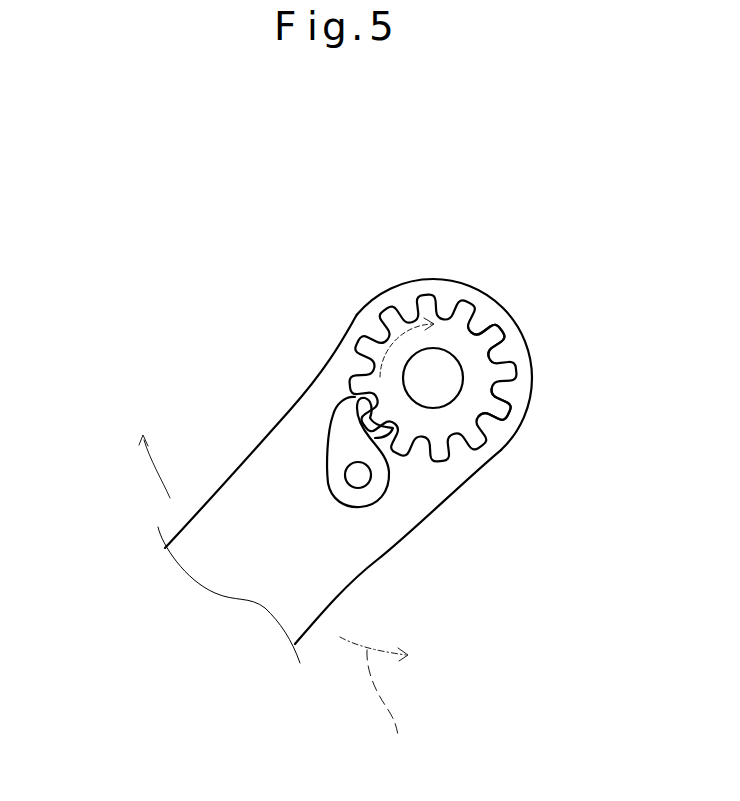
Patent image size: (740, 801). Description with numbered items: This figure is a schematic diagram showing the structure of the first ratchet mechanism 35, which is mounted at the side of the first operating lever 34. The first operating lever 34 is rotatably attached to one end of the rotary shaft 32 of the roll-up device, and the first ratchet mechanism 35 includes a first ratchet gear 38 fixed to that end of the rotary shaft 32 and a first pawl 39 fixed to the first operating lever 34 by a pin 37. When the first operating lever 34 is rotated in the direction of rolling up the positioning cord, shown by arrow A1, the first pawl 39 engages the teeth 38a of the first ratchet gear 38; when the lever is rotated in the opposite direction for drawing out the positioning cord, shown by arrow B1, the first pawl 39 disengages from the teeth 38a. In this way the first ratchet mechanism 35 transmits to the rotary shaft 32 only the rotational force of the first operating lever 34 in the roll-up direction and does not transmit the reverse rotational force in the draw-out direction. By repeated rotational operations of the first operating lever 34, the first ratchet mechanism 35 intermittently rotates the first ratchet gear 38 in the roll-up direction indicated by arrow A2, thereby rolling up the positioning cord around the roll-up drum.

The rotary shaft 32 is at (446, 376).
The first operating lever 34 is at (320, 582).
The first ratchet mechanism 35 is at (404, 298).
The pin 37 is at (362, 475).
The first ratchet gear 38 is at (467, 423).
The teeth 38a is at (500, 330).
The first pawl 39 is at (333, 448).
The direction of arrow A1 is at (150, 463).
The direction of arrow A2 is at (392, 310).
The direction of arrow B1 is at (379, 706).